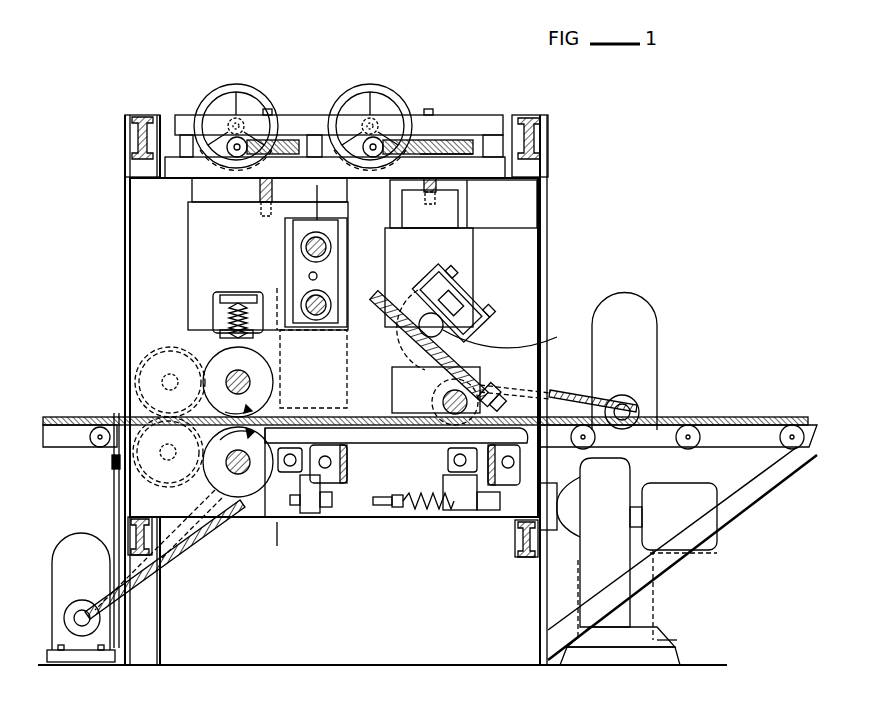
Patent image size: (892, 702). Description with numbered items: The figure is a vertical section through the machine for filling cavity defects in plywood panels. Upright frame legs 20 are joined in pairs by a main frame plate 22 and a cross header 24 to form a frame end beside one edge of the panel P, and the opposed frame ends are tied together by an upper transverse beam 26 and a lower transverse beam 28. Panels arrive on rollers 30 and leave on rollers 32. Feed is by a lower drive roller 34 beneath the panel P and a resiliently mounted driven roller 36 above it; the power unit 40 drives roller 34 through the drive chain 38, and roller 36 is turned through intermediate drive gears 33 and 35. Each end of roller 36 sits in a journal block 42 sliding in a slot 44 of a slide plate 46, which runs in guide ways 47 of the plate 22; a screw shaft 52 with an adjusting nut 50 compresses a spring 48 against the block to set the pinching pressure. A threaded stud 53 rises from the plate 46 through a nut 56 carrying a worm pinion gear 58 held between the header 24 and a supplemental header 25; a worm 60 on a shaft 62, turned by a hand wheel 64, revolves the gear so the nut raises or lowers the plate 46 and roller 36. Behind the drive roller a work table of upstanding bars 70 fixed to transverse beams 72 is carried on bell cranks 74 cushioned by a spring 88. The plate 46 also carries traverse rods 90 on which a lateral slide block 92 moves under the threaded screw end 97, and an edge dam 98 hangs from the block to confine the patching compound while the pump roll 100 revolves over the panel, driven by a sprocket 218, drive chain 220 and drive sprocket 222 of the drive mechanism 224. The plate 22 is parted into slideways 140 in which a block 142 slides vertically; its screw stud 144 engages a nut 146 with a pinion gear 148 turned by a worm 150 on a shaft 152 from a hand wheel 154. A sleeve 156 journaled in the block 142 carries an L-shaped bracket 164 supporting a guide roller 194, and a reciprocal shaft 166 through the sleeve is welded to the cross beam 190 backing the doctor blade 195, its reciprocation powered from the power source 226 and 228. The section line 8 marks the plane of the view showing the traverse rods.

The upright frame legs 20 is at (543, 230).
The main frame plate 22 is at (170, 270).
The cross header 24 is at (495, 163).
The supplemental header 25 is at (297, 92).
The transverse beam 26 is at (140, 130).
The transverse beam 28 is at (133, 528).
The rollers 30 is at (100, 447).
The rollers 32 is at (692, 447).
The intermediate drive gear 33 is at (152, 460).
The lower drive roller 34 is at (233, 487).
The intermediate drive gear 35 is at (142, 372).
The driven roller 36 is at (263, 382).
The drive chain 38 is at (185, 547).
The power unit 40 is at (97, 579).
The journal block 42 is at (217, 342).
The slot 44 is at (217, 312).
The slide plate 46 is at (240, 238).
The guide ways 47 is at (192, 190).
The spring 48 is at (252, 297).
The adjusting nut 50 is at (222, 295).
The screw shaft 52 is at (238, 295).
The threaded stud 53 is at (254, 197).
The nut 56 is at (267, 152).
The worm pinion gear 58 is at (290, 135).
The worm 60 is at (230, 140).
The shaft 62 is at (240, 140).
The hand wheel 64 is at (237, 87).
The upstanding bars 70 is at (380, 432).
The transverse beams 72 is at (487, 470).
The bell crank 74 is at (443, 480).
The spring 88 is at (425, 512).
The traverse rods 90 is at (330, 297).
The lateral slide block 92 is at (338, 228).
The screw end 97 is at (310, 275).
The edge dam 98 is at (328, 348).
The pump roll 100 is at (392, 405).
The slideways 140 is at (392, 204).
The block 142 is at (420, 254).
The screw stud 144 is at (430, 203).
The nut 146 is at (442, 154).
The pinion gear 148 is at (457, 137).
The worm 150 is at (367, 153).
The shaft 152 is at (372, 143).
The hand wheel 154 is at (360, 88).
The sleeve 156 is at (440, 332).
The L-shaped bracket 164 is at (488, 313).
The reciprocal shaft 166 is at (514, 331).
The cross beam 190 is at (420, 305).
The guide roller 194 is at (460, 300).
The doctor blade 195 is at (420, 332).
The sprocket 218 is at (442, 385).
The drive chain 220 is at (555, 392).
The drive sprocket 222 is at (642, 405).
The drive mechanism 224 is at (640, 352).
The power source 226 is at (622, 504).
The power source 228 is at (692, 521).
The panel P is at (55, 410).
The section line 8 is at (330, 189).